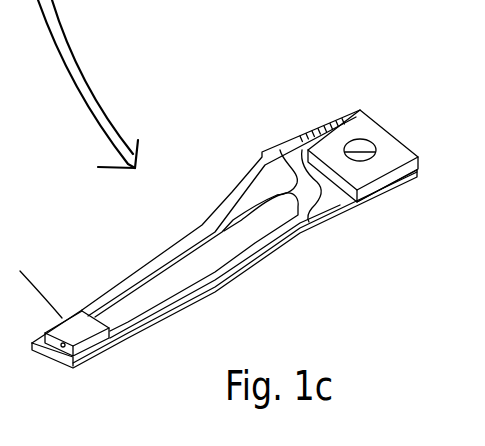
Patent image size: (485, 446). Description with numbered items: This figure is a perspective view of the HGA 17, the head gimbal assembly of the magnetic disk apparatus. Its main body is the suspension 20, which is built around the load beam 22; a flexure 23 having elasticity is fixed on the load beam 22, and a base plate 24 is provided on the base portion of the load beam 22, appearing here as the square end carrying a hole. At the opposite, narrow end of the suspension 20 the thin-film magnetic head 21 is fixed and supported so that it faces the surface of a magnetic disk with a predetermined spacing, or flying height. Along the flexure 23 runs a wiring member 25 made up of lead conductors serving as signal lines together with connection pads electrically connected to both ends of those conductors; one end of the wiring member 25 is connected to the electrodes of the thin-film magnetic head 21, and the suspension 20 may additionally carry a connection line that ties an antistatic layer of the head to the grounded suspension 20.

The HGA 17 is at (258, 115).
The suspension 20 is at (230, 189).
The thin-film magnetic head 21 is at (77, 330).
The load beam 22 is at (320, 213).
The flexure 23 is at (267, 220).
The base plate 24 is at (392, 160).
The wiring member 25 is at (190, 285).